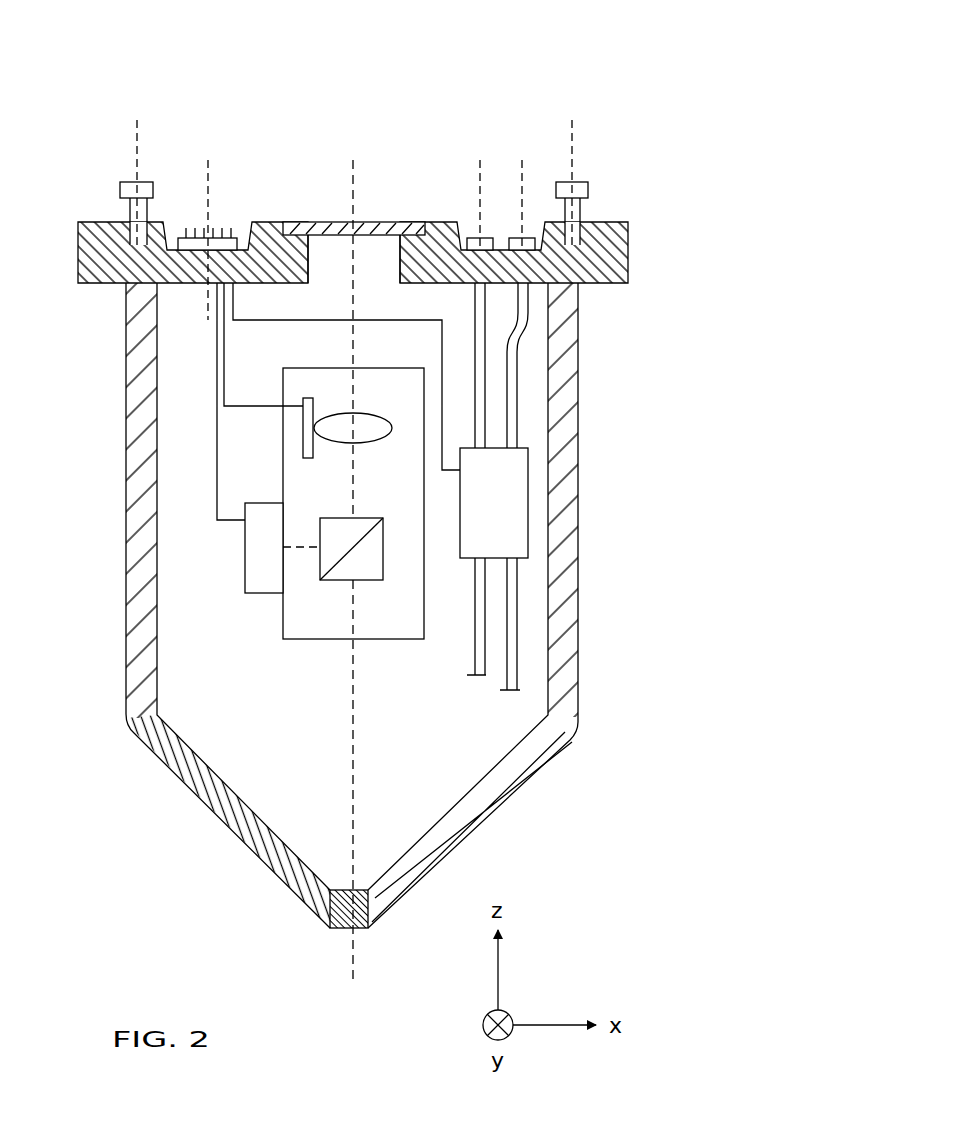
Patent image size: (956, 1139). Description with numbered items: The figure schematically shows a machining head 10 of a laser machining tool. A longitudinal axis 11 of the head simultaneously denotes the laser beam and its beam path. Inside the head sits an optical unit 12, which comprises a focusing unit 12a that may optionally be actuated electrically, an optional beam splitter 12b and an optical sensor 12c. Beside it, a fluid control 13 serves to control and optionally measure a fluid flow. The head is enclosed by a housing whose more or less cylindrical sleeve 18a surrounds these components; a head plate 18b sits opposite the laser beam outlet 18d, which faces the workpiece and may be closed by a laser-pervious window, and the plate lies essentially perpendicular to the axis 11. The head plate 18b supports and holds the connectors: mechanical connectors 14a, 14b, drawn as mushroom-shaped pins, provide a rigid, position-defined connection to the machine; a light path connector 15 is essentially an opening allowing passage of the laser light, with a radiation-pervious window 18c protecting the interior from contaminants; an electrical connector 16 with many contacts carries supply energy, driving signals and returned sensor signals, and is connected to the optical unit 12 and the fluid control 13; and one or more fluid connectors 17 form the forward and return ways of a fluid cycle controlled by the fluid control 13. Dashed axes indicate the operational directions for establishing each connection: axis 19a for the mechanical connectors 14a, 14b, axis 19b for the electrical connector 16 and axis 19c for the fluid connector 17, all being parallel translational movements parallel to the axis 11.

The machining head 10 is at (512, 88).
The longitudinal axis 11 is at (355, 722).
The optical unit 12 is at (298, 507).
The focusing unit 12a is at (308, 432).
The beam splitter 12b is at (333, 525).
The optical sensor 12c is at (250, 573).
The fluid control 13 is at (516, 515).
The mechanical connector 14a is at (120, 188).
The mechanical connector 14b is at (588, 190).
The light path connector 15 is at (316, 243).
The electrical connector 16 is at (232, 238).
The fluid connector 17 is at (516, 238).
The sleeve 18a is at (572, 392).
The head plate 18b is at (628, 242).
The window 18c is at (394, 232).
The laser beam outlet 18d is at (340, 930).
The axis of mechanical connector 19a is at (137, 145).
The axis of electrical connector 19b is at (208, 170).
The axis of fluid connector 19c is at (480, 176).